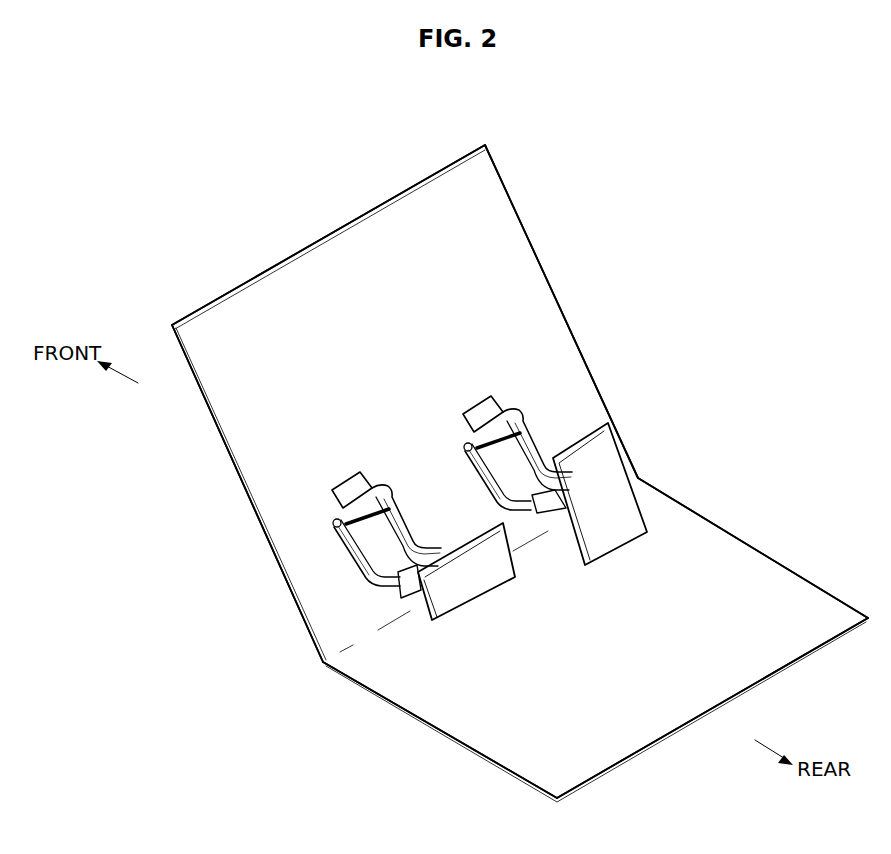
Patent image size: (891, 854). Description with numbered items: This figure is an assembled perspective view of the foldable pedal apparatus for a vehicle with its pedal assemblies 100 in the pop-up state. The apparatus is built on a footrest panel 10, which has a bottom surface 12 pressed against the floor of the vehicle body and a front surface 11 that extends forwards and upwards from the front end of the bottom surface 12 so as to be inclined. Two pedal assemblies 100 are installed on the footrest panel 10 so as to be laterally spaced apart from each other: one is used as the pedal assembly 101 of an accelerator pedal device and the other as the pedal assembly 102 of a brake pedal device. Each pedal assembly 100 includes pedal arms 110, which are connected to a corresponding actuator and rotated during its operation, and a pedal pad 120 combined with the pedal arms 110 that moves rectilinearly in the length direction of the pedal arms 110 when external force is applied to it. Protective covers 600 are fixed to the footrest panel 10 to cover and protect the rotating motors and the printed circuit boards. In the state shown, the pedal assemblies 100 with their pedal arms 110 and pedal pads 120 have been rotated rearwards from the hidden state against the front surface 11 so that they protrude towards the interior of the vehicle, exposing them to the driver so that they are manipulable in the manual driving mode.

The footrest panel 10 is at (520, 200).
The front surface 11 is at (307, 287).
The bottom surface 12 is at (818, 610).
The pedal assembly 100 is at (480, 541).
The pedal assembly of accelerator pedal device 101 is at (643, 508).
The pedal assembly of brake pedal device 102 is at (421, 618).
The pedal arm 110 is at (520, 470).
The pedal pad 120 is at (603, 462).
The protective cover 600 is at (500, 415).